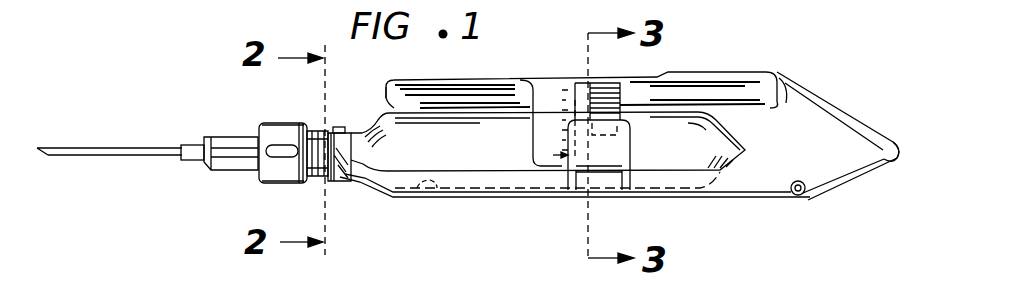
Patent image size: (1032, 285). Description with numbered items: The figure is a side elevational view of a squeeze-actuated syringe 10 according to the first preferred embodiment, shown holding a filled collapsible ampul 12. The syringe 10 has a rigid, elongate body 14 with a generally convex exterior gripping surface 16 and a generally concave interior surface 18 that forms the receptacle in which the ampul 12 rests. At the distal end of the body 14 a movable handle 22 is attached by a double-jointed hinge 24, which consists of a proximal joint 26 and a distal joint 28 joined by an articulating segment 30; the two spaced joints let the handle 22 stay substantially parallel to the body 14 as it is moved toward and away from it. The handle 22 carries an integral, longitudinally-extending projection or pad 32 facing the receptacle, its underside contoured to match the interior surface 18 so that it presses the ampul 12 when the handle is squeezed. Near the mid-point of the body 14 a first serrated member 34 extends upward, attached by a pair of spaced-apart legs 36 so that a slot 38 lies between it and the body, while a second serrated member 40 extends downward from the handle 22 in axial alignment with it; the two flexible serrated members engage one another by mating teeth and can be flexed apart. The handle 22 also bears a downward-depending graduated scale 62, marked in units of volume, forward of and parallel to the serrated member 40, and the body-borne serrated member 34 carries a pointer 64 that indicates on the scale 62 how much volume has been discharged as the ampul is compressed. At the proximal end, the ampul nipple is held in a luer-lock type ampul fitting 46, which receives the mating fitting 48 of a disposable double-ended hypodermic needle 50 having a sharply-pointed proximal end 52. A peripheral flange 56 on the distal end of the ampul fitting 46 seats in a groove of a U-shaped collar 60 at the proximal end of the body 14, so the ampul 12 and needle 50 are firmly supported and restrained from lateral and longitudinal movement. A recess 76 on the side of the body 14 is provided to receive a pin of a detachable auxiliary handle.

The squeeze-actuated syringe 10 is at (631, 128).
The collapsible ampul 12 is at (386, 127).
The body 14 is at (706, 199).
The exterior gripping surface 16 is at (475, 198).
The interior surface 18 is at (412, 194).
The movable handle 22 is at (506, 80).
The double-jointed hinge 24 is at (858, 92).
The proximal joint 26 is at (781, 98).
The distal joint 28 is at (902, 152).
The articulating segment 30 is at (843, 125).
The projection or pad 32 is at (398, 101).
The first serrated member 34 is at (617, 149).
The legs 36 is at (563, 178).
The slot 38 is at (603, 168).
The second serrated member 40 is at (628, 83).
The ampul fitting 46 is at (272, 123).
The needle fitting 48 is at (226, 140).
The hypodermic needle 50 is at (144, 148).
The proximal end 52 is at (37, 148).
The peripheral flange 56 is at (336, 127).
The U-shaped collar 60 is at (336, 157).
The graduated scale 62 is at (537, 140).
The pointer 64 is at (553, 155).
The recesses 76 is at (804, 192).